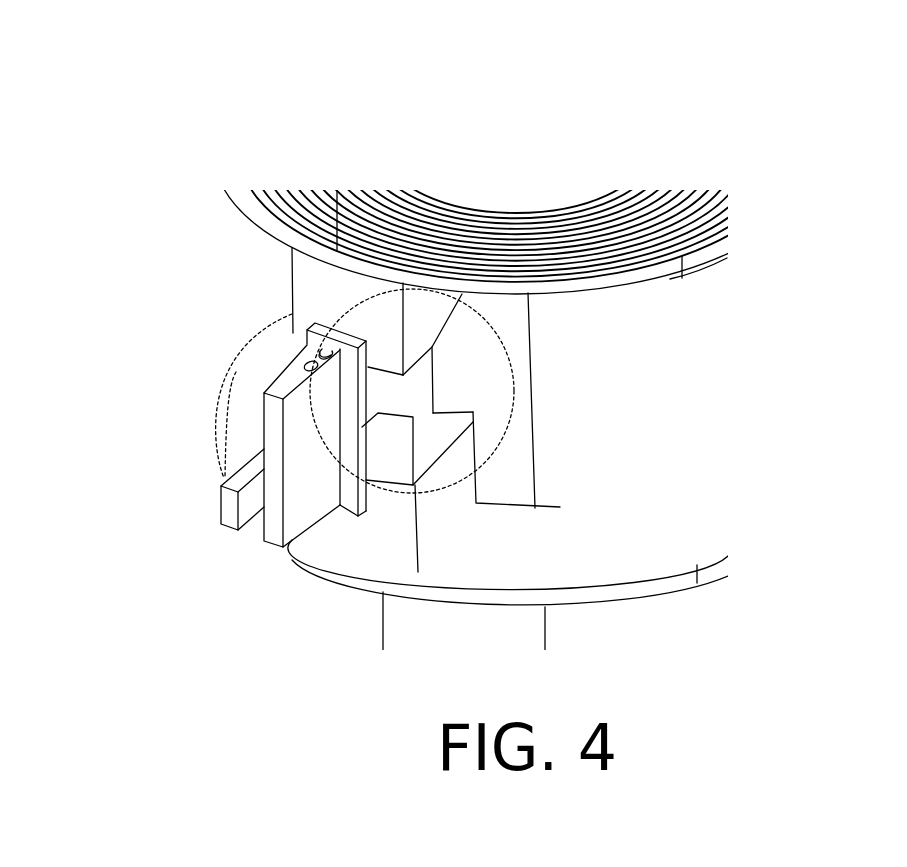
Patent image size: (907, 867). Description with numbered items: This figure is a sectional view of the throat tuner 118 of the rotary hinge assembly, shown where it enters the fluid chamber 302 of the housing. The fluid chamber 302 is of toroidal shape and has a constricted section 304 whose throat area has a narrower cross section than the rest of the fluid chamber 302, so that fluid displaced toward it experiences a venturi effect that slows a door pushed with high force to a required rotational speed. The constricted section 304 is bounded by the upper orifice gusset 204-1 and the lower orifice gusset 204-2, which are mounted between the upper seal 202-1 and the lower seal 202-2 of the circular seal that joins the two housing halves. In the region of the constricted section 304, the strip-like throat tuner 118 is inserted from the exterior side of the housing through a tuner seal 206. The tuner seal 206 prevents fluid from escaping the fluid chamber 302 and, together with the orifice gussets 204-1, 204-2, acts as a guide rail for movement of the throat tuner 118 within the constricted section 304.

The throat tuner 118 is at (222, 480).
The upper seal 202-1 is at (672, 277).
The lower seal 202-2 is at (665, 567).
The upper orifice gusset 204-1 is at (292, 293).
The lower orifice gusset 204-2 is at (473, 447).
The tuner seal 206 is at (370, 511).
The fluid chamber 302 is at (743, 362).
The constricted section 304 is at (508, 380).